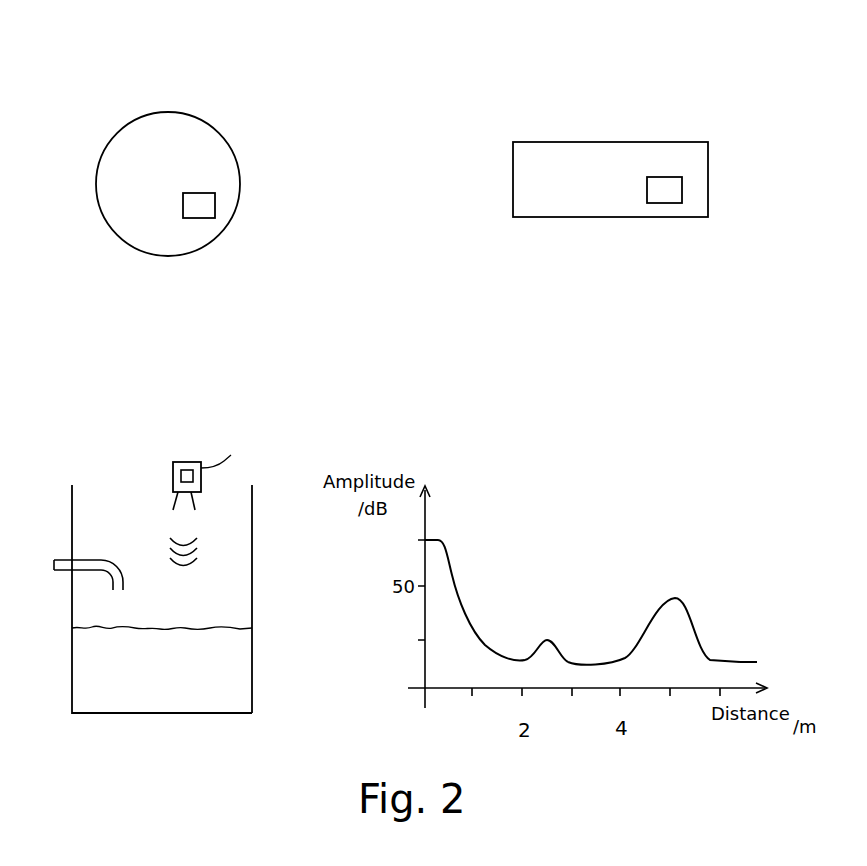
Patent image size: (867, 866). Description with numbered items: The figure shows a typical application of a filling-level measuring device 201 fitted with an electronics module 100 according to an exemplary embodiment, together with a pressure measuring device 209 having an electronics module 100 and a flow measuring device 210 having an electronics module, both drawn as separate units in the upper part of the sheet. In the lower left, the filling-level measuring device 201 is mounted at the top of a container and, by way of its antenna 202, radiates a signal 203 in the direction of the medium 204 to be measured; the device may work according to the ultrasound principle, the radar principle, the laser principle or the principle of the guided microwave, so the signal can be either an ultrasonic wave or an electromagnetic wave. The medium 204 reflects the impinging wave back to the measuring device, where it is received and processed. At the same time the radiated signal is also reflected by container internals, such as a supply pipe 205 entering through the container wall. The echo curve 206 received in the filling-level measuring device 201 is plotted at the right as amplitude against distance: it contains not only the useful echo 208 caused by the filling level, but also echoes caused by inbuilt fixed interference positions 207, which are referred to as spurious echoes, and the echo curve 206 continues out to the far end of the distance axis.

The electronics module 100 is at (200, 218).
The filling-level measuring device 201 is at (186, 462).
The antenna 202 is at (198, 508).
The signal 203 is at (202, 548).
The medium 204 is at (158, 645).
The supply pipe 205 is at (90, 563).
The echo curve 206 is at (97, 713).
The fixed interference positions 207 is at (545, 639).
The useful echo 208 is at (675, 599).
The pressure measuring device 209 is at (163, 112).
The flow measuring device 210 is at (593, 142).